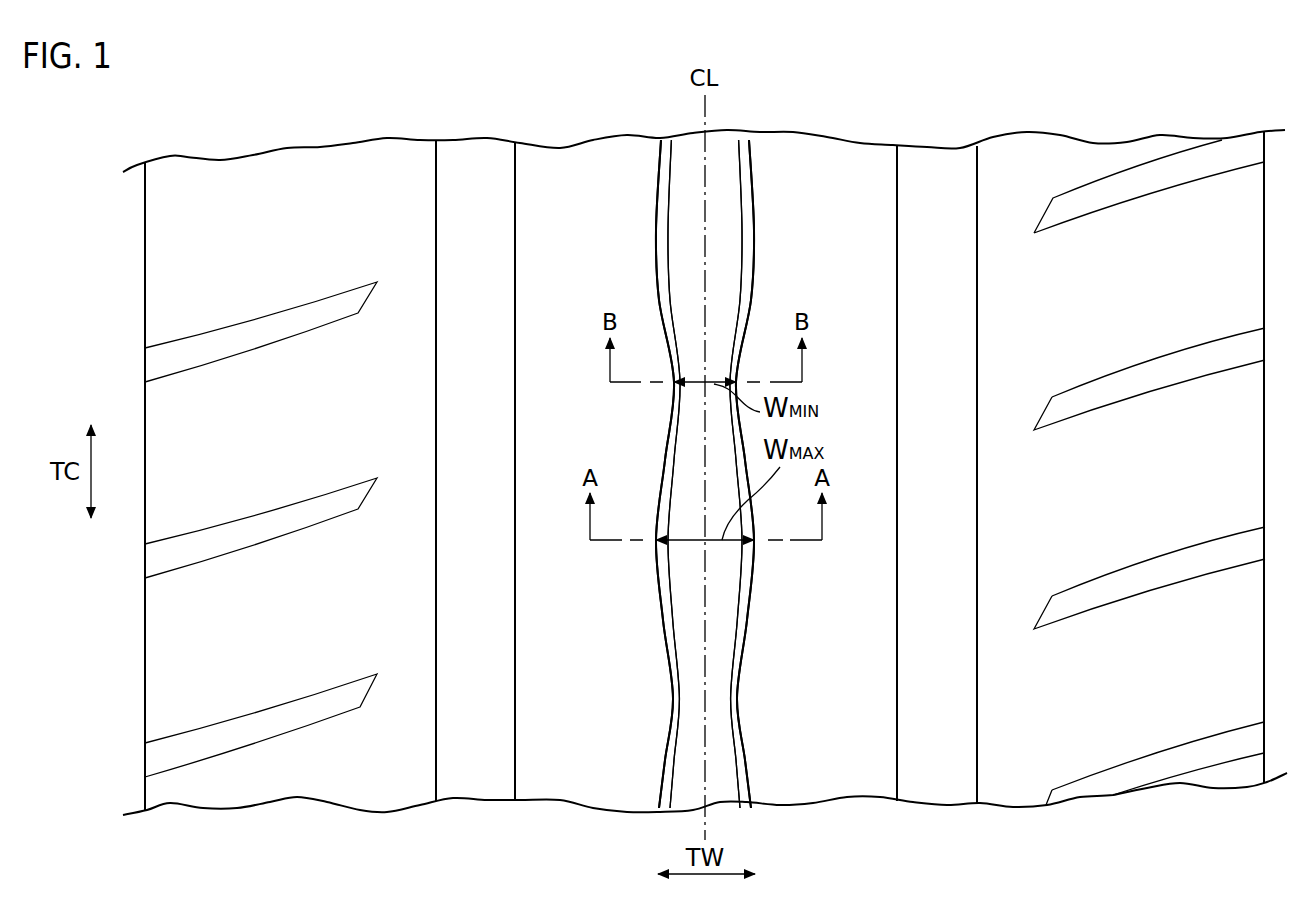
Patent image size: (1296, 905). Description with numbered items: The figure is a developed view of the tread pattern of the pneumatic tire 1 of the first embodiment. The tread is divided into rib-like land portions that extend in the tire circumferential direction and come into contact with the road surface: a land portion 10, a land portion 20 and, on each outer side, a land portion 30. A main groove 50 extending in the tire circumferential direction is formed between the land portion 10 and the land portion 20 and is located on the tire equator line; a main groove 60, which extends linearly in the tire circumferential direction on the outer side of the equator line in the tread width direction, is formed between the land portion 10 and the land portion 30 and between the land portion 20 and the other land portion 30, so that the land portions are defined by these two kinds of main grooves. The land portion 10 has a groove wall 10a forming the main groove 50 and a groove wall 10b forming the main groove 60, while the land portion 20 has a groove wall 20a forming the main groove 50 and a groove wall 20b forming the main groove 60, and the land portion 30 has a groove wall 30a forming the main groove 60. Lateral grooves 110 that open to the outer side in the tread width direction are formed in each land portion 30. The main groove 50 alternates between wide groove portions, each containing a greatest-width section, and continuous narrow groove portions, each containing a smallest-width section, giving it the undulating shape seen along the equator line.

The pneumatic tire 1 is at (825, 65).
The land portion 10 is at (583, 156).
The groove wall 10a is at (668, 148).
The groove wall 10b is at (515, 177).
The land portion 20 is at (825, 156).
The groove wall 20a is at (740, 148).
The groove wall 20b is at (897, 177).
The land portion 30 is at (345, 158).
The groove wall 30a is at (436, 178).
The main groove 50 is at (720, 150).
The main groove 60 is at (470, 166).
The lateral grooves 110 is at (247, 338).